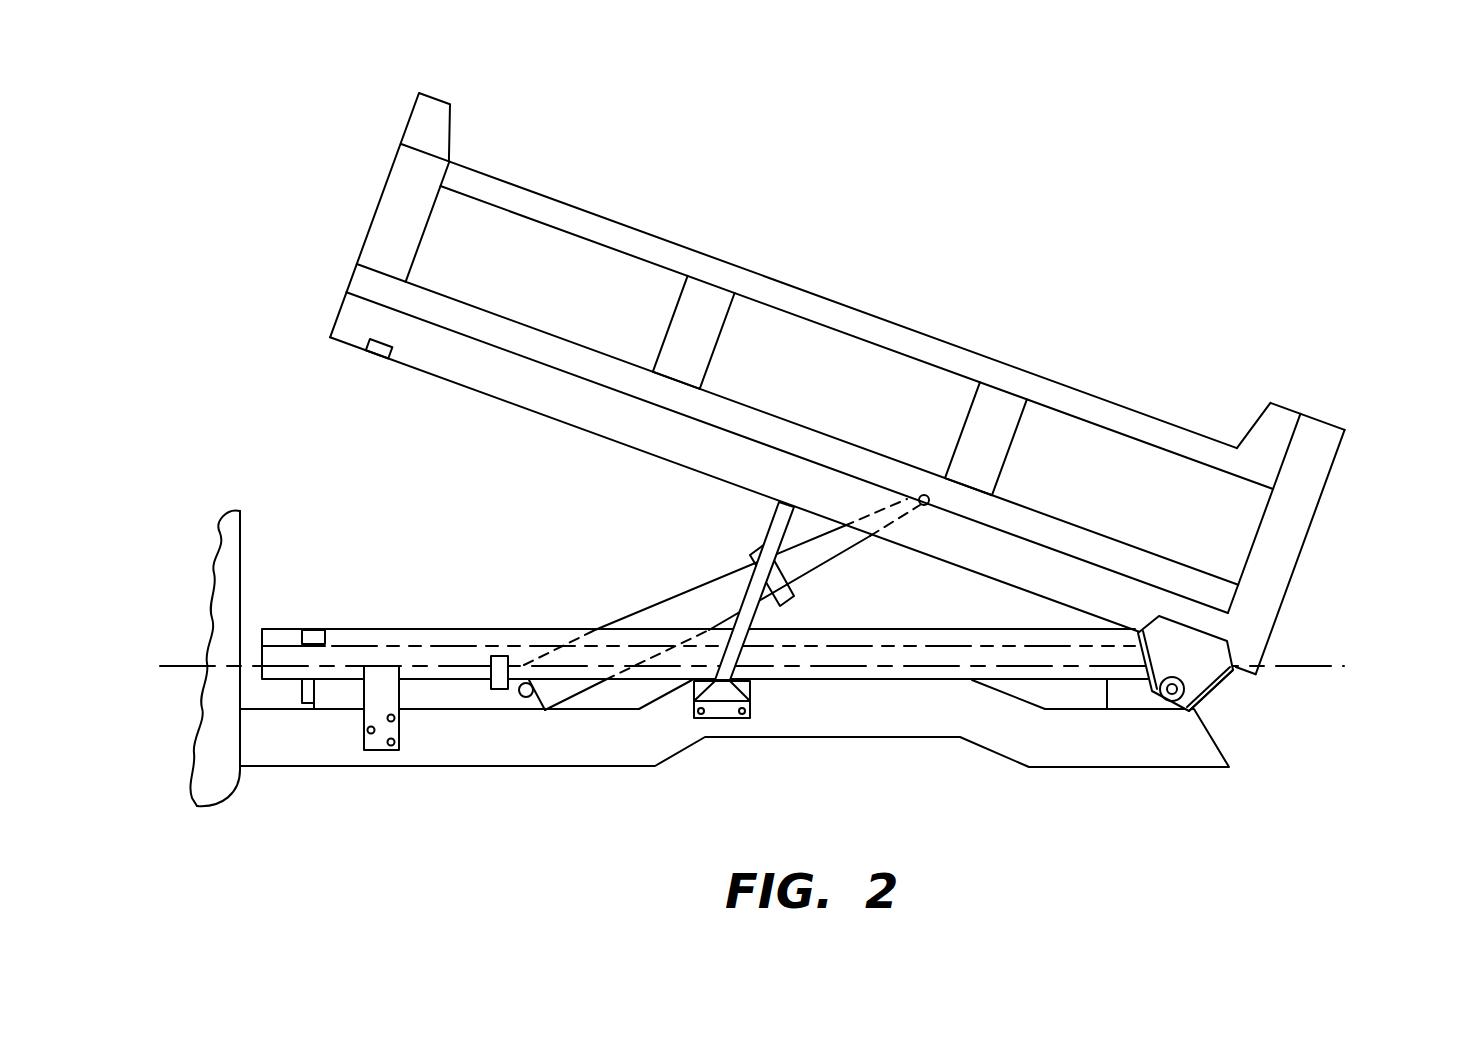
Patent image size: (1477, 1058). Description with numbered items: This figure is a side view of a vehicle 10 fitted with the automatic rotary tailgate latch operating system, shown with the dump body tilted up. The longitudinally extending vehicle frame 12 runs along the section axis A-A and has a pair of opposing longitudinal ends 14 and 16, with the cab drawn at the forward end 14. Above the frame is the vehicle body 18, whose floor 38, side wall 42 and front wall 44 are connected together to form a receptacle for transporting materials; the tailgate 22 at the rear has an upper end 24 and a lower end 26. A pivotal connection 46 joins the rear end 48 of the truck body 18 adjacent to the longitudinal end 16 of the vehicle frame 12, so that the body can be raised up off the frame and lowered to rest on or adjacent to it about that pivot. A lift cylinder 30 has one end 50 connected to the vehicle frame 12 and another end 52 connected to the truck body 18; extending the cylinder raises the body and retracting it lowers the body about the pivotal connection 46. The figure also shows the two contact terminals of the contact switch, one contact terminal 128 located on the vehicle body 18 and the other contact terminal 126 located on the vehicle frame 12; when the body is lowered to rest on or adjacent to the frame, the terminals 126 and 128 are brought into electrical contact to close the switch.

The vehicle 10 is at (802, 462).
The vehicle frame 12 is at (897, 715).
The longitudinal end 14 is at (227, 562).
The longitudinal end 16 is at (1194, 723).
The vehicle body 18 is at (825, 416).
The tailgate 22 is at (1299, 506).
The upper end 24 is at (1328, 420).
The lower end 26 is at (1247, 678).
The lift cylinder 30 is at (721, 663).
The floor 38 is at (778, 464).
The side wall 42 is at (585, 267).
The front wall 44 is at (393, 212).
The pivotal connection 46 is at (1170, 690).
The end of the truck body 48 is at (1260, 668).
The end of the lift cylinder 50 is at (524, 696).
The end of the lift cylinder 52 is at (924, 505).
The contact terminal 126 is at (309, 628).
The contact terminal 128 is at (378, 347).